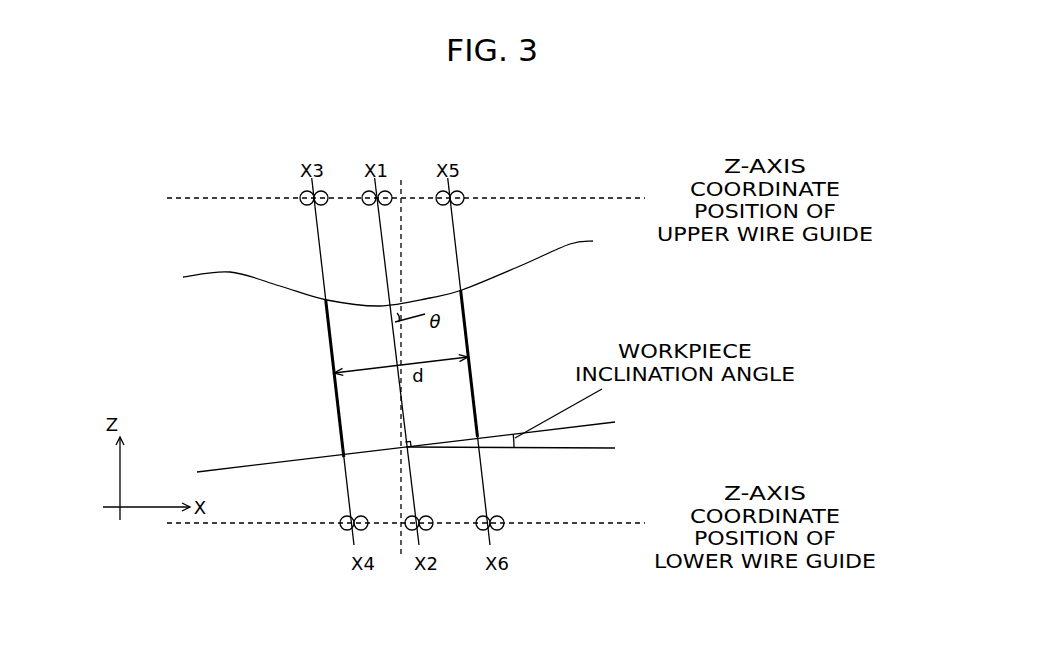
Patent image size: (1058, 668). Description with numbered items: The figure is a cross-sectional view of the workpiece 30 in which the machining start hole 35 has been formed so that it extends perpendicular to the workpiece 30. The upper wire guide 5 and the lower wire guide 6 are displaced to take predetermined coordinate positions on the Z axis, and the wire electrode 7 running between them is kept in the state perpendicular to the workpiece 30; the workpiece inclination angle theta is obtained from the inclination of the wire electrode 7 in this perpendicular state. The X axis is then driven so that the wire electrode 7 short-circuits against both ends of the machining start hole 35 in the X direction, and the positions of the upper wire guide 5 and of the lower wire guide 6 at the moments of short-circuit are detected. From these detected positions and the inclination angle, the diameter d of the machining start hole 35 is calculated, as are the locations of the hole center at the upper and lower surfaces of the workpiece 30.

The upper wire guide 5 is at (443, 190).
The lower wire guide 6 is at (483, 531).
The wire electrode 7 is at (318, 253).
The workpiece 30 is at (298, 445).
The machining start hole 35 is at (338, 327).